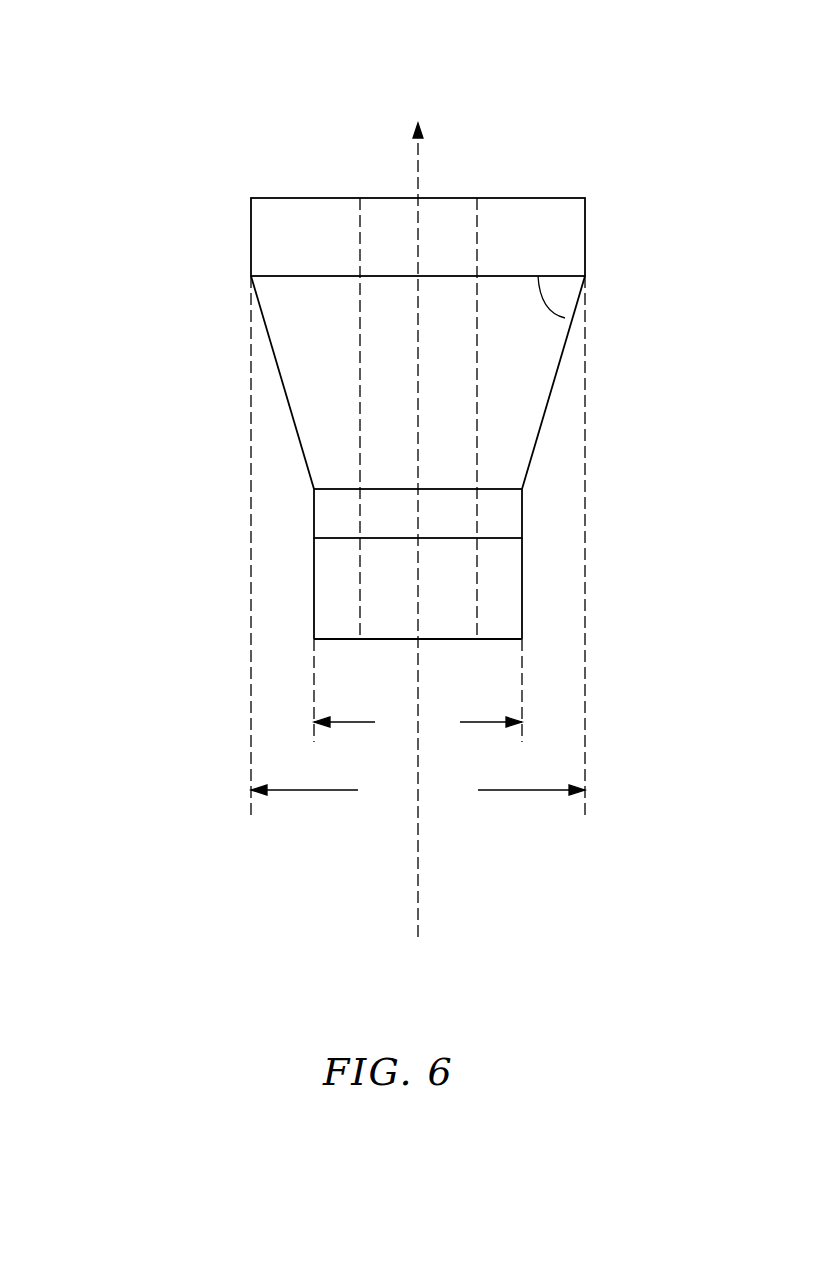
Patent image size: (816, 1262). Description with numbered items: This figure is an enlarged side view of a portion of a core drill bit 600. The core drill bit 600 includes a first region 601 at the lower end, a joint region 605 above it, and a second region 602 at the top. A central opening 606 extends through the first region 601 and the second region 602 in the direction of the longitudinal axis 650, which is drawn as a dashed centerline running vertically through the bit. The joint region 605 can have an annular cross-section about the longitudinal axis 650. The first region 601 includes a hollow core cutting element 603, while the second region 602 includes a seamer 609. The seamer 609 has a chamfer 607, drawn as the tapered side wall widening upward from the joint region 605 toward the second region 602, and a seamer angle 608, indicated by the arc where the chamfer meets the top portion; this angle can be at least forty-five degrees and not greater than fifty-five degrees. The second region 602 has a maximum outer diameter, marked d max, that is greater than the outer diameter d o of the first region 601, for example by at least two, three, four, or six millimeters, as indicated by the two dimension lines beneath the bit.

The core drill bit 600 is at (140, 75).
The second region 602 is at (585, 238).
The longitudinal axis 650 is at (418, 243).
The central opening 606 is at (382, 357).
The chamfer 607 is at (280, 376).
The seamer 609 is at (534, 394).
The seamer angle 608 is at (554, 308).
The joint region 605 is at (314, 513).
The first region 601 is at (314, 577).
The hollow core cutting element 603 is at (339, 620).